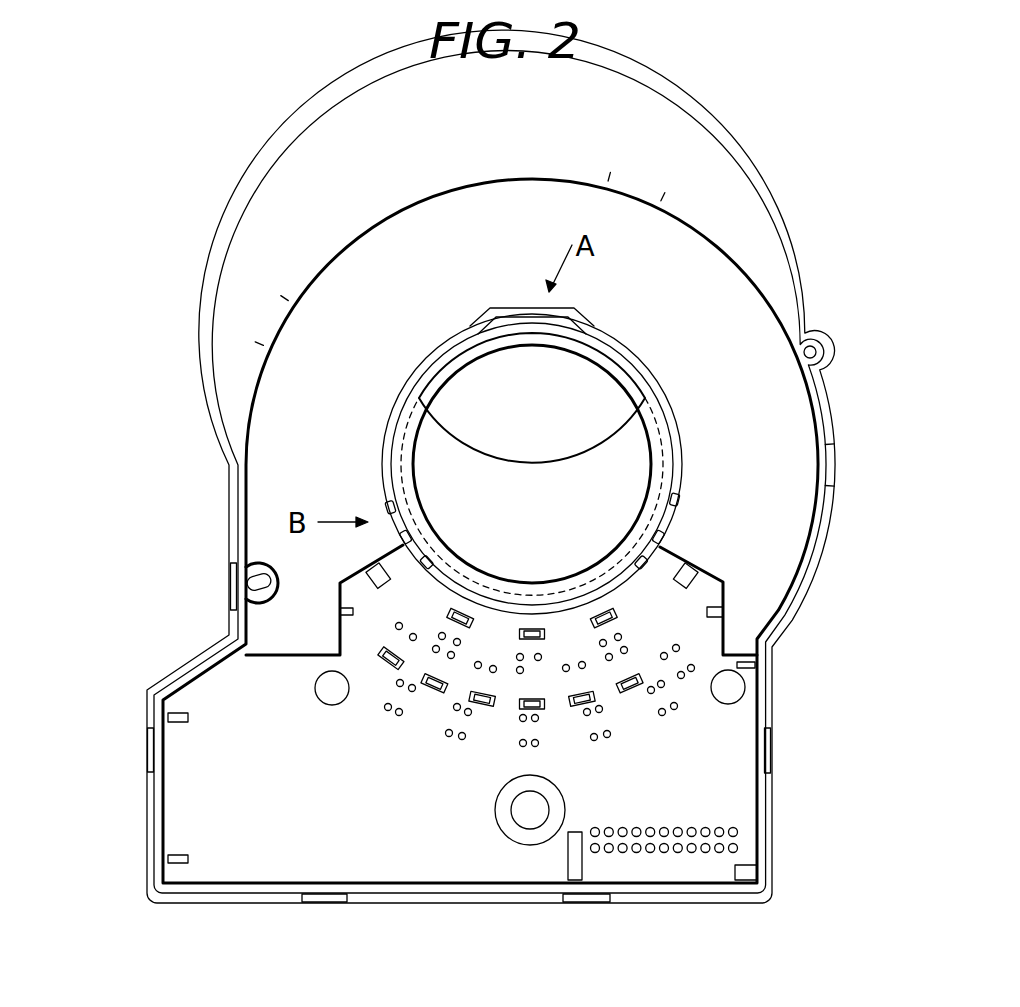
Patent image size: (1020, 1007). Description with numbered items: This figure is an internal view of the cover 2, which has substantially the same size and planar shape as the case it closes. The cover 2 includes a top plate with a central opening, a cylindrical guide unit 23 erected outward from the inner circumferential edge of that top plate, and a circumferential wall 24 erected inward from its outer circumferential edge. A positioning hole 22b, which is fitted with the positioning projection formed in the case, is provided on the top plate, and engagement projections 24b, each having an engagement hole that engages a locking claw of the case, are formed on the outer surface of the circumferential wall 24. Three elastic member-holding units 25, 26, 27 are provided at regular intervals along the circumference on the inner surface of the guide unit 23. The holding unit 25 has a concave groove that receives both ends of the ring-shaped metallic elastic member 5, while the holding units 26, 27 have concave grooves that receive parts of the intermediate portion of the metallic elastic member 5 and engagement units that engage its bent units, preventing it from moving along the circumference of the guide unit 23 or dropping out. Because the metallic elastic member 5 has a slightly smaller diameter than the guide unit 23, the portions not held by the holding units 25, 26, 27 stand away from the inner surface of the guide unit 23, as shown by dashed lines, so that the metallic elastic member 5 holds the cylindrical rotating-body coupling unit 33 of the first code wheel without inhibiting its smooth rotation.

The cover 2 is at (828, 406).
The metallic elastic member 5 is at (385, 492).
The positioning hole 22b is at (530, 817).
The guide unit 23 is at (387, 415).
The circumferential wall 24 is at (751, 272).
The engagement projection 24b is at (640, 187).
The elastic member-holding unit 25 is at (512, 320).
The elastic member-holding unit 26 is at (392, 500).
The elastic member-holding unit 27 is at (662, 521).
The rotating-body coupling unit 33 is at (470, 387).